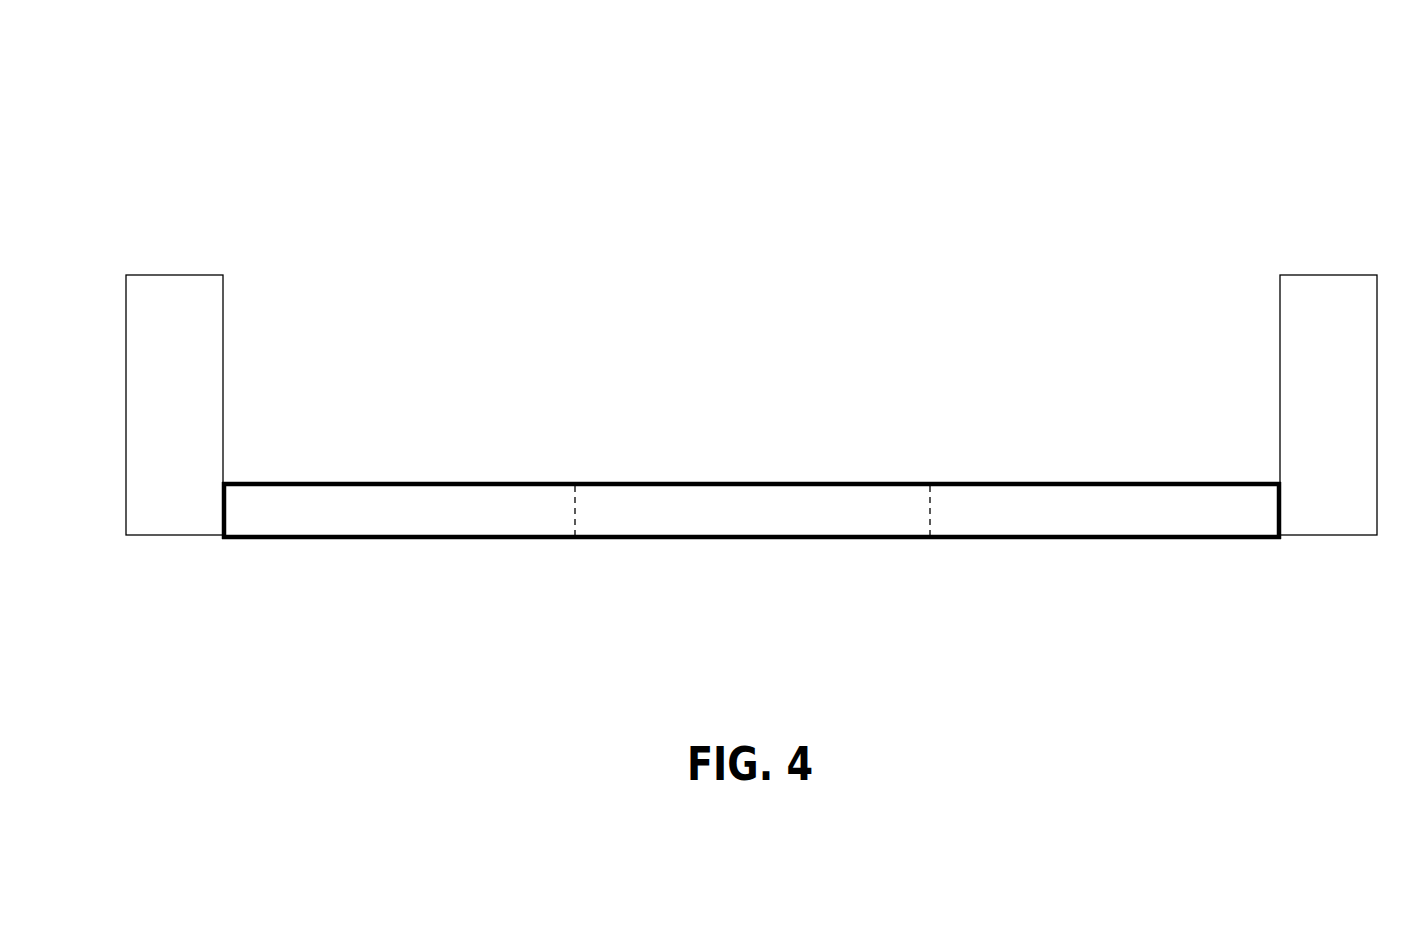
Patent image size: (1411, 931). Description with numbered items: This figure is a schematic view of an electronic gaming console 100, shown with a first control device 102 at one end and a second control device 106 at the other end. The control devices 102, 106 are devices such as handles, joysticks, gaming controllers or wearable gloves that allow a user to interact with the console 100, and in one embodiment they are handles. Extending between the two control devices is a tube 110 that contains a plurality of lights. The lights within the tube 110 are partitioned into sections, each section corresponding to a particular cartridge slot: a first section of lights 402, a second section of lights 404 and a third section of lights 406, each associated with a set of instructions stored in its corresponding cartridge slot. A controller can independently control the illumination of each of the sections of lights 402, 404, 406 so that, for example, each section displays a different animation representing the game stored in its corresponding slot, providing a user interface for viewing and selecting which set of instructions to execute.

The electronic gaming console 100 is at (482, 65).
The first control device 102 is at (223, 275).
The second control device 106 is at (1308, 300).
The tube 110 is at (676, 450).
The first section of lights 402 is at (388, 510).
The second section of lights 404 is at (743, 513).
The third section of lights 406 is at (1162, 513).